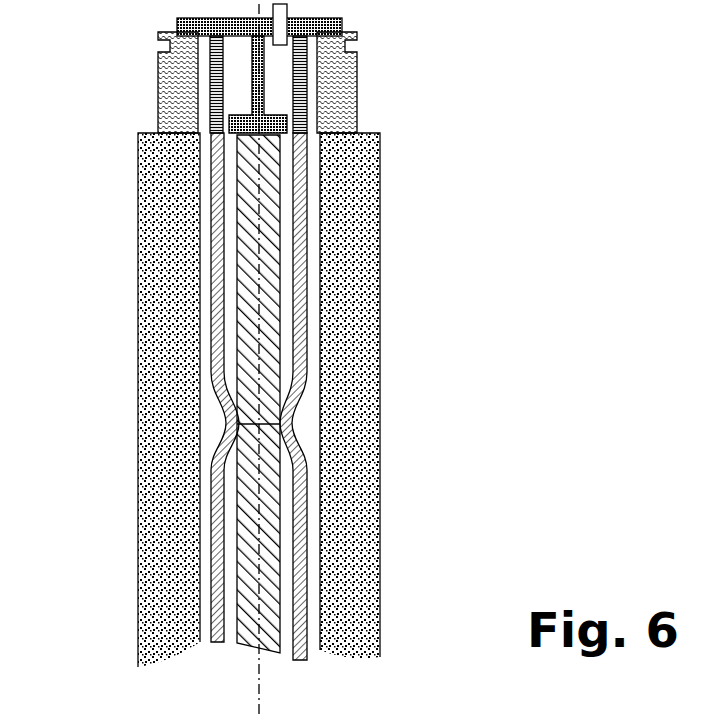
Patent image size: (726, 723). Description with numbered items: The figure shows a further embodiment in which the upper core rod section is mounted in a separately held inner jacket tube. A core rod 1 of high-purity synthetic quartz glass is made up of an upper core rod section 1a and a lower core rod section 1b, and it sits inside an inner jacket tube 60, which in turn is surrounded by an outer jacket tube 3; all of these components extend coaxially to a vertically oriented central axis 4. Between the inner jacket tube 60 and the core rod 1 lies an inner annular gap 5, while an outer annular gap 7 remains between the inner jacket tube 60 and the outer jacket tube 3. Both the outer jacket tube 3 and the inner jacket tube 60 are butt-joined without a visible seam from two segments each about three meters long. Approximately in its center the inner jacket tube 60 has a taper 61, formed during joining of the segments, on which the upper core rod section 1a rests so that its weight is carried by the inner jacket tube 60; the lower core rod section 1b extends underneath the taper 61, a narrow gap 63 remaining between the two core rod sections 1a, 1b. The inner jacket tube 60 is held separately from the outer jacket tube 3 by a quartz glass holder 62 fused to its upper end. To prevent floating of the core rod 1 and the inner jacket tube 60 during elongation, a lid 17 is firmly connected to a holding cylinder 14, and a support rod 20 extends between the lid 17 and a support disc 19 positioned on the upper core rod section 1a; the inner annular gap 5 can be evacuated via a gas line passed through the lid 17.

The core rod 1 is at (236, 210).
The upper core rod section 1a is at (258, 227).
The lower core rod section 1b is at (268, 503).
The outer jacket tube 3 is at (158, 338).
The central axis 4 is at (258, 666).
The inner annular gap 5 is at (283, 355).
The outer annular gap 7 is at (312, 288).
The holding cylinder 14 is at (158, 122).
The lid 17 is at (177, 21).
The support disc 19 is at (210, 107).
The support rod 20 is at (265, 82).
The inner jacket tube 60 is at (215, 290).
The taper 61 is at (293, 427).
The holder 62 is at (312, 112).
The narrow gap 63 is at (240, 423).